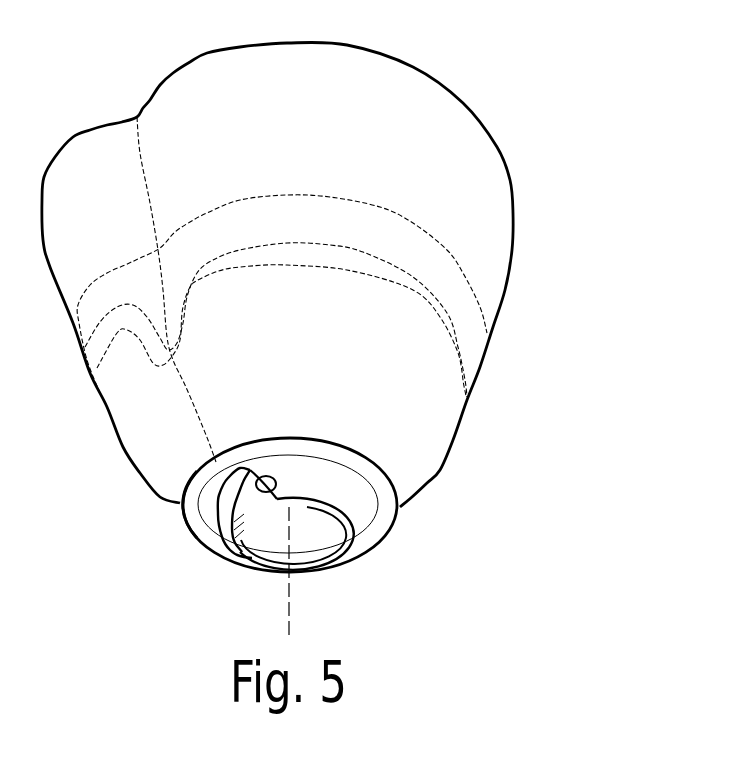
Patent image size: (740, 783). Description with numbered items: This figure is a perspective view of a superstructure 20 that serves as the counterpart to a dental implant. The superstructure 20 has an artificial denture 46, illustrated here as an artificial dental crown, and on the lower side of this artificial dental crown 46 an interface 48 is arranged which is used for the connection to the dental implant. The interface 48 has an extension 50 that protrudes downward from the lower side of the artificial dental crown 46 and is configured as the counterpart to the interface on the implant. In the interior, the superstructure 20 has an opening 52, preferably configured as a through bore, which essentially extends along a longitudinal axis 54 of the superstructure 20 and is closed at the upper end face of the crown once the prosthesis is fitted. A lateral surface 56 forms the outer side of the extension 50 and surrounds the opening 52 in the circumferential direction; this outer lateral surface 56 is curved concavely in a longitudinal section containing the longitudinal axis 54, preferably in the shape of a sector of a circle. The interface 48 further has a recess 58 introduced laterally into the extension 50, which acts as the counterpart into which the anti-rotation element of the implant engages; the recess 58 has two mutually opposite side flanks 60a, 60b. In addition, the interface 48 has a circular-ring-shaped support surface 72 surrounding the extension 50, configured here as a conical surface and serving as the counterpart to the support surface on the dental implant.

The superstructure 20 is at (522, 108).
The artificial denture 46 is at (493, 217).
The interface 48 is at (387, 523).
The extension 50 is at (266, 509).
The opening 52 is at (317, 545).
The longitudinal axis 54 is at (287, 620).
The lateral surface 56 is at (351, 487).
The recess 58 is at (187, 478).
The side flank 60a is at (228, 542).
The side flank 60b is at (271, 480).
The support surface 72 is at (330, 453).